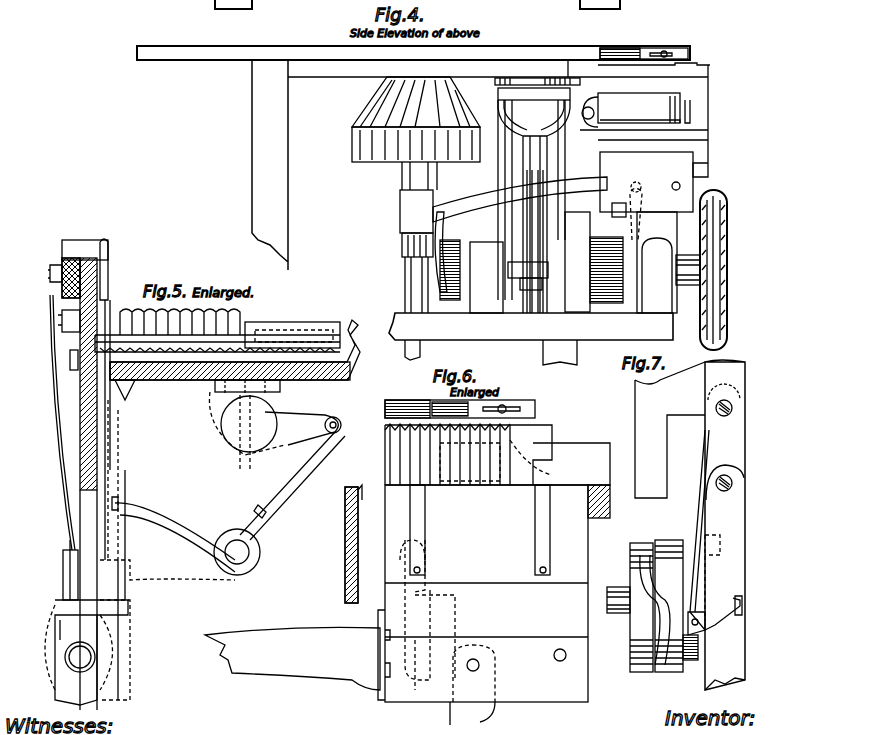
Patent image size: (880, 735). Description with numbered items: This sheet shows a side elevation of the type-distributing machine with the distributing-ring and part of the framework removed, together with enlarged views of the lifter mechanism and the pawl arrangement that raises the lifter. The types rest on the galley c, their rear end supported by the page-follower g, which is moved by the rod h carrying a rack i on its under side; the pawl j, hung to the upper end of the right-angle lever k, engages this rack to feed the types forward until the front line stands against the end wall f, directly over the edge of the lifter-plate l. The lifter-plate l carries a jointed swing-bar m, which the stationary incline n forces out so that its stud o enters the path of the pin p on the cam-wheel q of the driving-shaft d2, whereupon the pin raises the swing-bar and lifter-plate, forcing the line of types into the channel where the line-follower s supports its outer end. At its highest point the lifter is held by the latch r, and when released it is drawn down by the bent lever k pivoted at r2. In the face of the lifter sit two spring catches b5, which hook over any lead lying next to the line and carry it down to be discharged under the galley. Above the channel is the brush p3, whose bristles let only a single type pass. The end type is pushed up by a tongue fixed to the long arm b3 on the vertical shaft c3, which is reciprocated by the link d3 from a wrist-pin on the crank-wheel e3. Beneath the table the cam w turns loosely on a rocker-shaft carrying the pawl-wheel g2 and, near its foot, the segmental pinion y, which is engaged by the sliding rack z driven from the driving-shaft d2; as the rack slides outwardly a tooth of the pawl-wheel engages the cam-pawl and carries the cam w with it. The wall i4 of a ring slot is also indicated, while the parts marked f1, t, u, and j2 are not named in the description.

In FIG. 4, the brush p3 is at (604, 49).
In FIG. 6, the brush p3 is at (460, 402).
In FIG. 4, the wall of the slot i4 is at (416, 119).
In FIG. 4, the vertical shaft c3 is at (410, 285).
In FIG. 4, the cam w is at (543, 84).
In FIG. 4, the pawl-wheel g2 is at (534, 200).
In FIG. 4, the long arm b3 is at (520, 199).
In FIG. 4, the page-follower g is at (631, 110).
In FIG. 4, the rod h is at (588, 117).
In FIG. 4, the pin f1 is at (672, 109).
In FIG. 4, the end wall f is at (688, 111).
In FIG. 4, the galley c is at (644, 129).
In FIG. 4, the lifter-plate l is at (646, 176).
In FIG. 5, the lifter-plate l is at (92, 484).
In FIG. 6, the lifter-plate l is at (486, 593).
In FIG. 7, the lifter-plate l is at (725, 525).
In FIG. 4, the driving-shaft d2 is at (688, 270).
In FIG. 7, the driving-shaft d2 is at (618, 600).
In FIG. 4, the segmental pinion y is at (528, 241).
In FIG. 4, the sliding rack z is at (523, 286).
In FIG. 4, the crank-wheel e3 is at (450, 270).
In FIG. 6, the crank-wheel e3 is at (360, 538).
In FIG. 4, the link d3 is at (446, 252).
In FIG. 4, the stationary incline n is at (623, 285).
In FIG. 4, the right-angle lever k is at (619, 210).
In FIG. 5, the right-angle lever k is at (228, 502).
In FIG. 4, the swing-bar m is at (634, 211).
In FIG. 6, the swing-bar m is at (472, 685).
In FIG. 7, the swing-bar m is at (735, 602).
In FIG. 5, the line-follower s is at (85, 269).
In FIG. 6, the line-follower s is at (560, 455).
In FIG. 5, the stud t is at (67, 321).
In FIG. 5, the spring u is at (62, 422).
In FIG. 5, the rack i is at (217, 350).
In FIG. 5, the pawl j is at (245, 397).
In FIG. 5, the disk j2 is at (247, 431).
In FIG. 5, the pivot r2 is at (237, 552).
In FIG. 6, the spring catches b5 is at (480, 530).
In FIG. 6, the latch r is at (427, 615).
In FIG. 7, the cam-wheel q is at (656, 606).
In FIG. 7, the stud o is at (696, 623).
In FIG. 7, the pin p is at (690, 653).